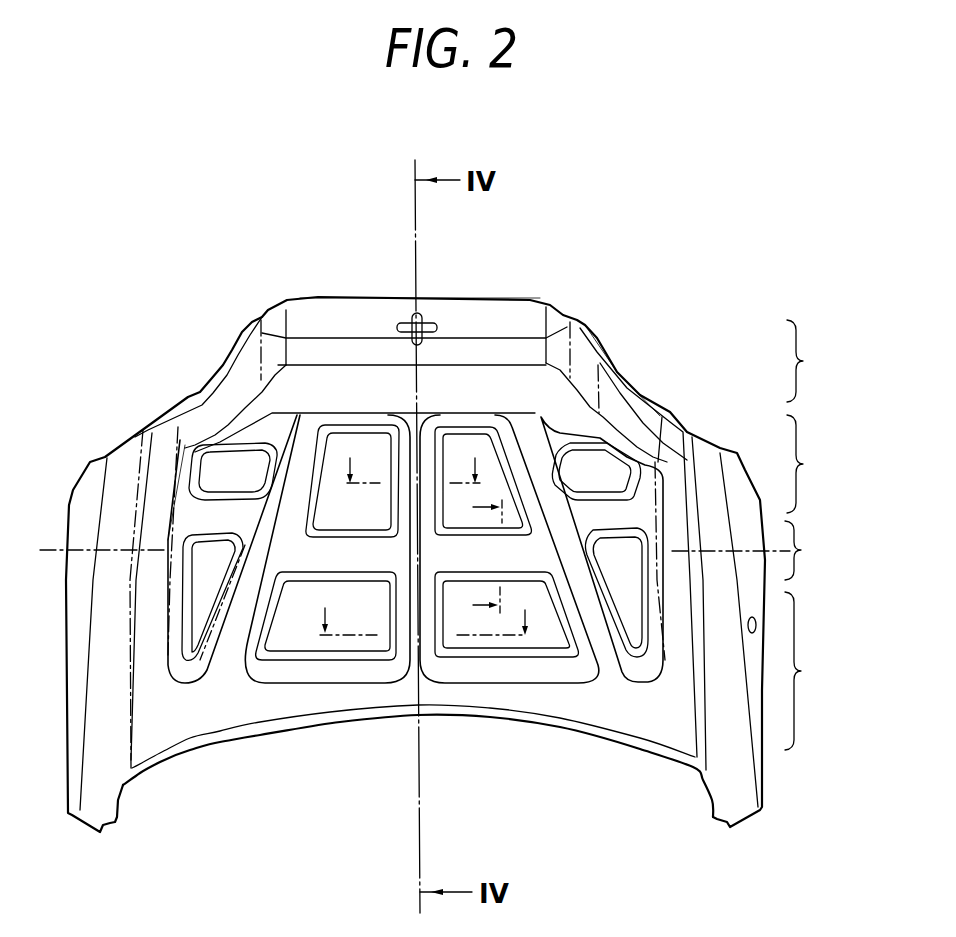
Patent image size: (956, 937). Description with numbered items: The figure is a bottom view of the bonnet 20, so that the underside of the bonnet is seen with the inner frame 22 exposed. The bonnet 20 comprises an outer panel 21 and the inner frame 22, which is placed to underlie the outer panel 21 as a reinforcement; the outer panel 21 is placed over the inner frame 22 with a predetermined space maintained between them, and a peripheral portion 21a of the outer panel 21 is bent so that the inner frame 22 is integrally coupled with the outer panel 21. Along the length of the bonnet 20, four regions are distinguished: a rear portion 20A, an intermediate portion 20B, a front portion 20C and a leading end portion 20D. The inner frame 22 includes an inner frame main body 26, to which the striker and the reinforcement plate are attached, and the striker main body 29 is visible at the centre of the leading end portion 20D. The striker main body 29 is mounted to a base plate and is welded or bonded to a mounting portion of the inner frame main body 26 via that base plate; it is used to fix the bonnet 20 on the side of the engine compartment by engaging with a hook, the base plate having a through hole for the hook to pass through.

The bonnet 20 is at (704, 90).
The rear portion of the bonnet 20A is at (816, 671).
The intermediate portion of the bonnet 20B is at (817, 550).
The front portion of the bonnet 20C is at (818, 464).
The leading end portion of the bonnet 20D is at (819, 361).
The outer panel 21 is at (230, 465).
The peripheral portion of the outer panel 21a is at (527, 298).
The inner frame 22 is at (200, 510).
The inner frame main body 26 is at (520, 397).
The striker main body 29 is at (426, 310).